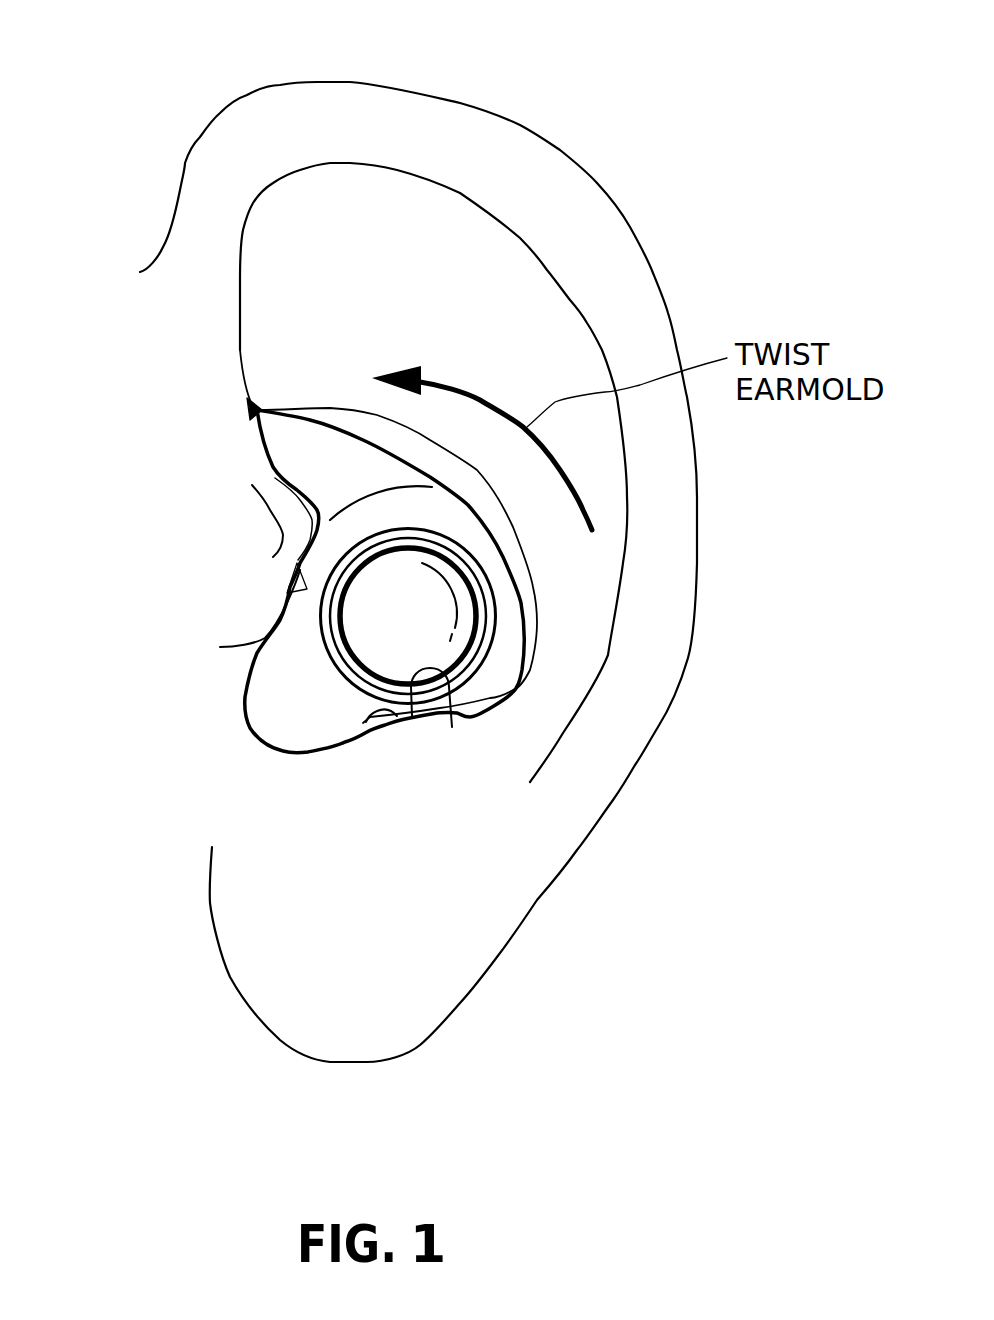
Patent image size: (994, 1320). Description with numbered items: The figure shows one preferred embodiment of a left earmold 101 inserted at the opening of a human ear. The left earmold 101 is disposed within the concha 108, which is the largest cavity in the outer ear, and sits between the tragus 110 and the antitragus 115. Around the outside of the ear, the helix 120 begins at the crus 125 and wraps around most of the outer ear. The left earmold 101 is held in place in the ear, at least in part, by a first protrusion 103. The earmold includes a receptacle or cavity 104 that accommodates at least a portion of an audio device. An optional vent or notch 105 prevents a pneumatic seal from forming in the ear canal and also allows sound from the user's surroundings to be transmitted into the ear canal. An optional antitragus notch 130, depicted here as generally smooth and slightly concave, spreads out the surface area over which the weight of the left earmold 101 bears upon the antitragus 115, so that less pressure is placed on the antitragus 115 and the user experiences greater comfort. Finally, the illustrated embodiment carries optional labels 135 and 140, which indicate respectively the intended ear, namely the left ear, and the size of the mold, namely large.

The left earmold 101 is at (235, 710).
The first protrusion 103 is at (305, 453).
The receptacle or cavity 104 is at (452, 727).
The vent or notch 105 is at (228, 647).
The concha 108 is at (502, 523).
The tragus 110 is at (302, 525).
The antitragus 115 is at (413, 716).
The helix 120 is at (463, 135).
The crus 125 is at (227, 423).
The antitragus notch 130 is at (365, 727).
The label 135 is at (440, 528).
The label 140 is at (297, 673).